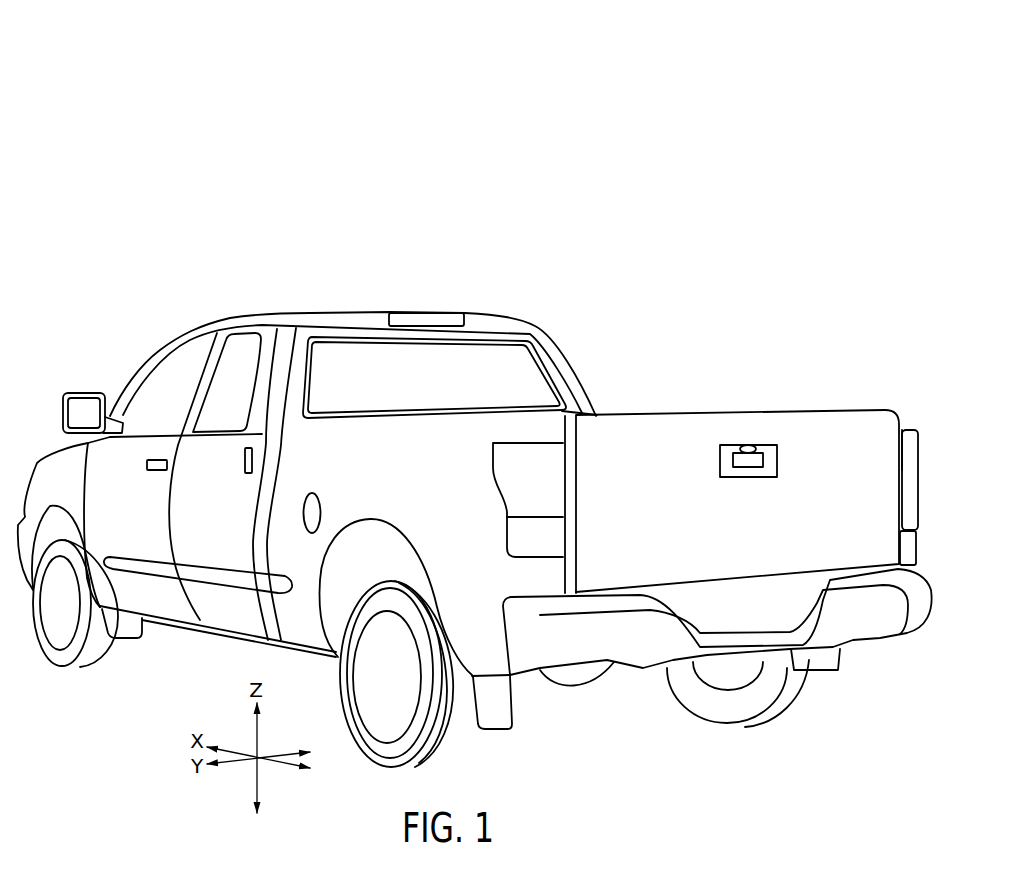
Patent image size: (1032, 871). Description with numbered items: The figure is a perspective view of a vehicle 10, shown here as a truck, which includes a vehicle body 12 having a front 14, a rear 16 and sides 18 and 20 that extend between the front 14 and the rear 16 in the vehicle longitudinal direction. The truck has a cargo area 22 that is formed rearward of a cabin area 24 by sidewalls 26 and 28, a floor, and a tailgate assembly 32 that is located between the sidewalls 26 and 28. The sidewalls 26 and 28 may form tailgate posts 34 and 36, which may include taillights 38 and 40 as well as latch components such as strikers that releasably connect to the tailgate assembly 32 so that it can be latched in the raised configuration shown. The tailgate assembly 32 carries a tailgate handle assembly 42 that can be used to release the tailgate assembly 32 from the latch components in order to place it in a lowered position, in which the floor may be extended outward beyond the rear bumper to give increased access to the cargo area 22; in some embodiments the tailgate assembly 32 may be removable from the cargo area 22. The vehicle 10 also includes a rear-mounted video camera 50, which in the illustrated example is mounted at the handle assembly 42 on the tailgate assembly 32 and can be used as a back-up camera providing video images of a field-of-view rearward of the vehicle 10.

The vehicle 10 is at (640, 110).
The vehicle body 12 is at (266, 334).
The front 14 is at (137, 312).
The rear 16 is at (919, 557).
The side 18 is at (205, 614).
The side 20 is at (587, 361).
The cargo area 22 is at (760, 398).
The cabin area 24 is at (438, 308).
The sidewall 26 is at (323, 434).
The sidewall 28 is at (897, 402).
The tailgate assembly 32 is at (805, 428).
The tailgate post 34 is at (566, 581).
The tailgate post 36 is at (903, 423).
The taillight 38 is at (493, 464).
The taillight 40 is at (903, 480).
The tailgate handle assembly 42 is at (713, 443).
The rear-mounted video camera 50 is at (735, 448).